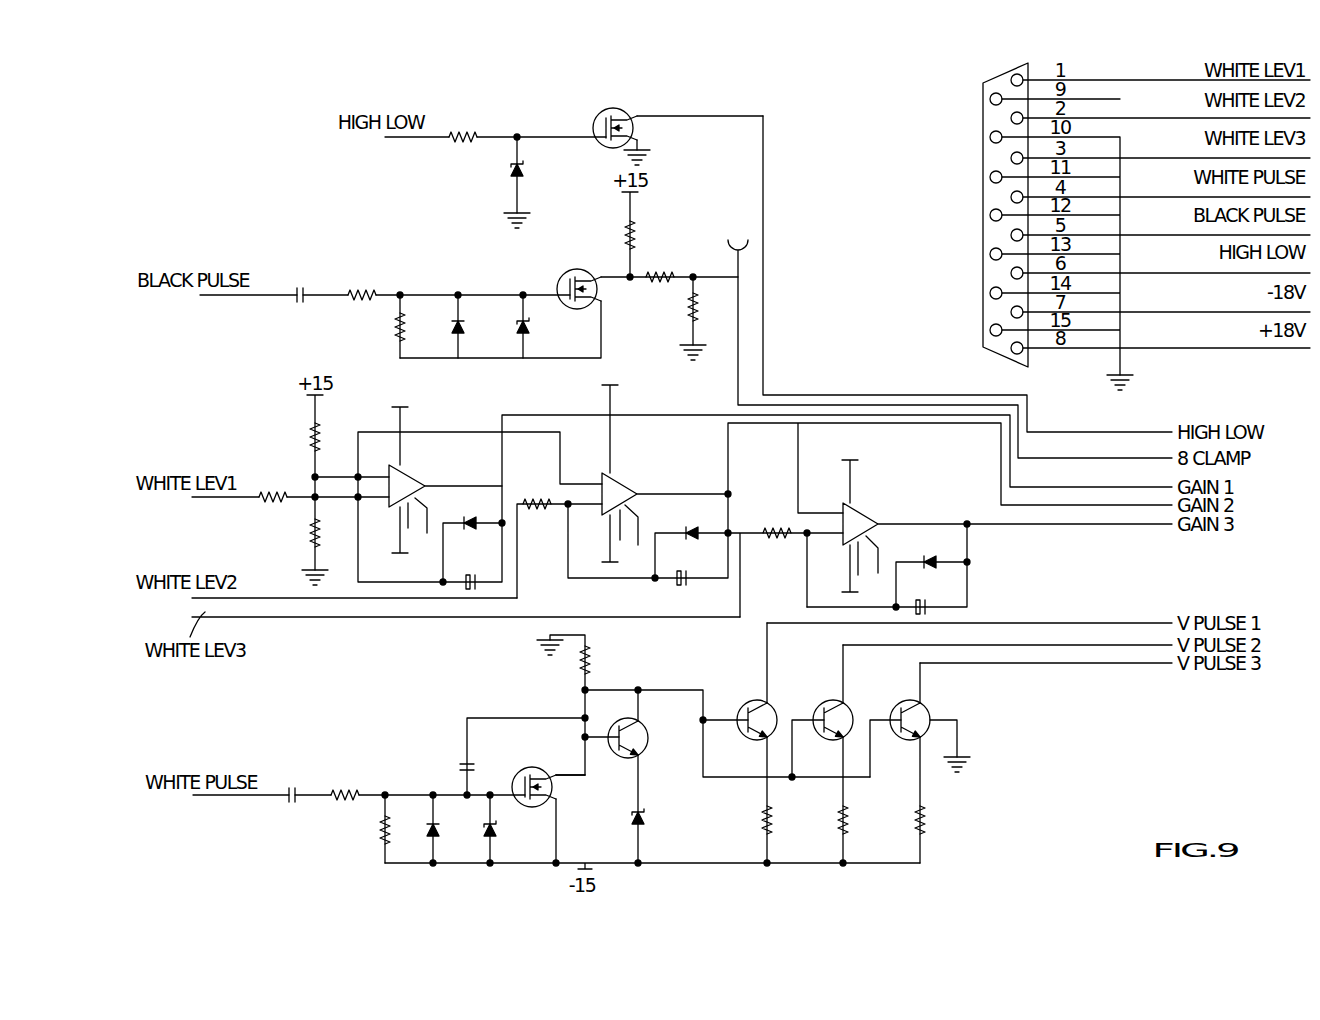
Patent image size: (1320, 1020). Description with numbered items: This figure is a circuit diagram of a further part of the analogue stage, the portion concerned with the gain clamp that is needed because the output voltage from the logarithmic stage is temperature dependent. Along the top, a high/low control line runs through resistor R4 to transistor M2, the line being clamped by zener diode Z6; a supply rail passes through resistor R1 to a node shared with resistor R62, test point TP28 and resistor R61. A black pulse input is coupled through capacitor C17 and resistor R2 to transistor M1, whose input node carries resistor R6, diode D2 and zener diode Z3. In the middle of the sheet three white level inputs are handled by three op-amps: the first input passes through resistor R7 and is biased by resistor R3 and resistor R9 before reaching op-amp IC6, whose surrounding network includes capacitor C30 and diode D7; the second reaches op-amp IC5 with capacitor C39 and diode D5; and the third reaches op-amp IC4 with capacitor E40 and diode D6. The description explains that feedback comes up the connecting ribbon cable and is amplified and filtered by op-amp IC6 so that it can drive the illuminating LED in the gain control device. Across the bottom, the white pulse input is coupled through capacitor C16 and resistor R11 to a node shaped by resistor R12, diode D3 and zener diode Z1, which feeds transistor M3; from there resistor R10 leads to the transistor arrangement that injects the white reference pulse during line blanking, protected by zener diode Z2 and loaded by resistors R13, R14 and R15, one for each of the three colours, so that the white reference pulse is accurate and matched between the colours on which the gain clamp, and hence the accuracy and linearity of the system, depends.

The resistor 10K R4 is at (467, 117).
The zener diode 6V0 Z6 is at (534, 182).
The MOSFET ZVXL120A M2 is at (678, 118).
The resistor 2K2 R1 is at (612, 235).
The resistor 10K R62 is at (663, 258).
The resistor 14K R61 is at (708, 318).
The test point BC TP28 is at (944, 328).
The capacitor 100n C17 is at (300, 274).
The resistor 100 R2 is at (362, 273).
The MOSFET ZVXL120A M1 is at (515, 302).
The resistor 100K R6 is at (421, 326).
The diode BAT85 D2 is at (486, 326).
The zener diode 6V0 Z3 is at (543, 326).
The resistors R3 (47K, 470, 470) R3 is at (533, 476).
The resistor 478 R7 is at (270, 517).
The resistor 10K R9 is at (327, 548).
The op-amp IC6 is at (420, 550).
The capacitors C30 (47uf, 47P) C30 is at (472, 589).
The diode IH414B D7 is at (470, 530).
The op amp TL071 IC5 is at (592, 590).
The capacitor 47uf C39 is at (683, 585).
The diode IH414B D5 is at (692, 540).
The op amp TL071 IC4 is at (835, 633).
The capacitor 47uf E40 is at (928, 612).
The diode IH4148 D6 is at (935, 566).
The capacitor 100n C16 is at (295, 773).
The resistor 330 R11 is at (347, 775).
The resistor 100K R12 is at (364, 829).
The diode BAT05 D3 is at (440, 835).
The zener diode 6VB Z1 is at (510, 829).
The MOSFET ZVNL120A M3 is at (539, 792).
The resistor 560 R10 is at (580, 705).
The zener diode 1N021 6V2 Z2 is at (667, 823).
The resistor 1K69 RC55 R13 is at (770, 822).
The resistor 1K69 RC55 R14 is at (847, 822).
The resistor 1K69 RC55 R15 is at (965, 817).